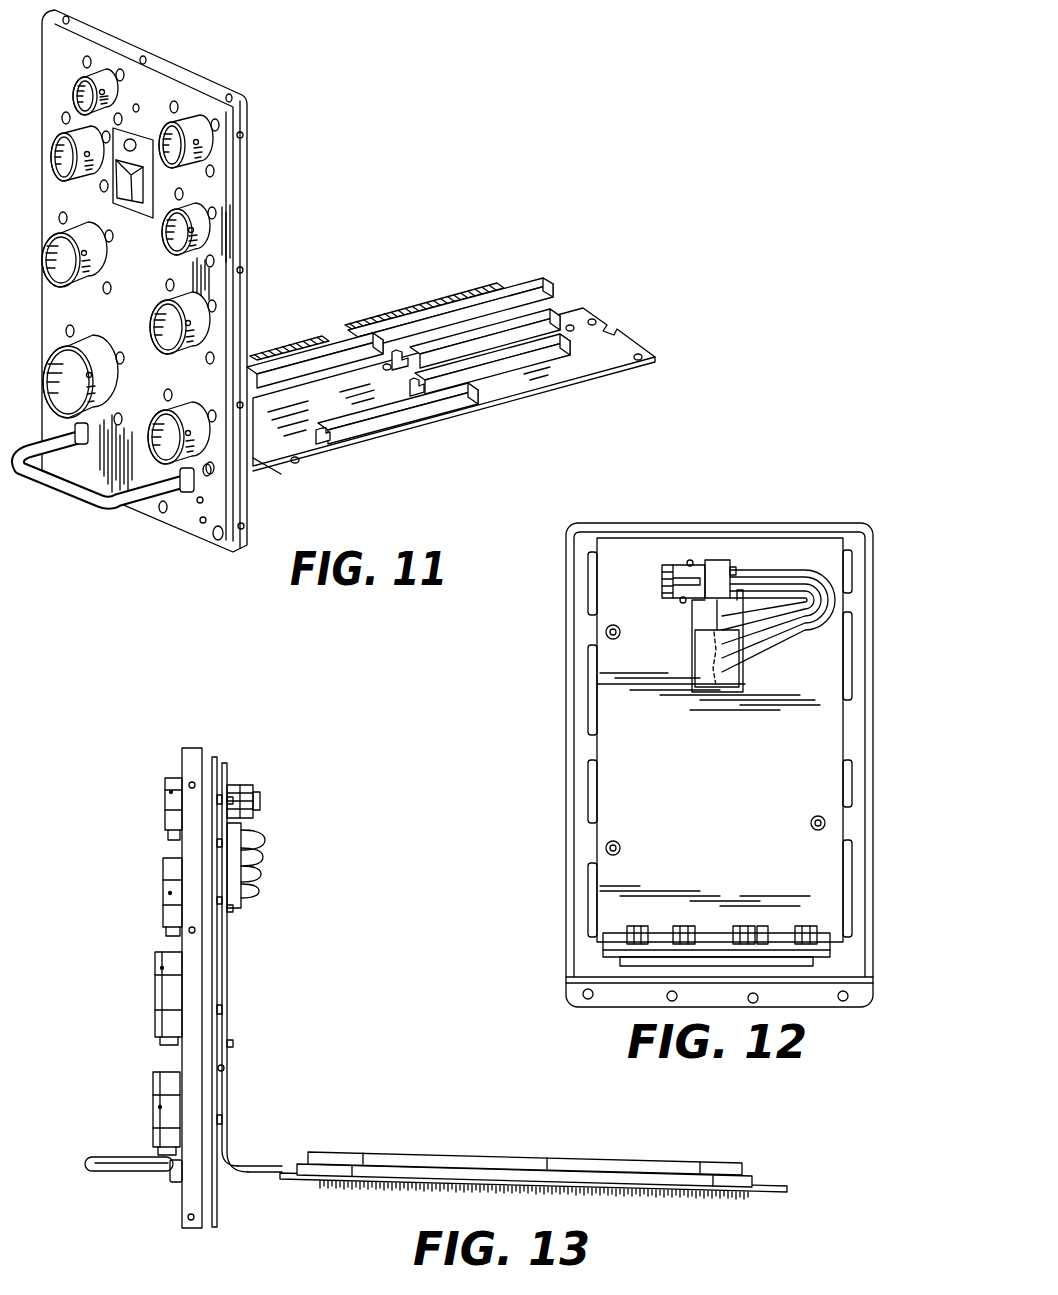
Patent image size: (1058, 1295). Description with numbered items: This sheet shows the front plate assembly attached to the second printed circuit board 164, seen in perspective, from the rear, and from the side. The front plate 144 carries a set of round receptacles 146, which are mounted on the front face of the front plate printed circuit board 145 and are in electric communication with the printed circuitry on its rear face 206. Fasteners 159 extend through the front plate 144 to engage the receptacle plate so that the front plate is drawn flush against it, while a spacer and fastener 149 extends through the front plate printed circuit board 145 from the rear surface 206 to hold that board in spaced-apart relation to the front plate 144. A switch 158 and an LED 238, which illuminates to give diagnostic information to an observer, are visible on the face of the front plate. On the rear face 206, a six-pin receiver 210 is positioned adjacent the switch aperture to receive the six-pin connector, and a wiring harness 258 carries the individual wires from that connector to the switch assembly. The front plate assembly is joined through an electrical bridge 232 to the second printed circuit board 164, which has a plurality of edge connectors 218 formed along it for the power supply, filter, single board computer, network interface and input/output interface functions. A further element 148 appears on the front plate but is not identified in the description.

In FIG. 11, the front plate 144 is at (217, 517).
In FIG. 13, the front plate 144 is at (202, 1228).
In FIG. 12, the front plate printed circuit board 145 is at (602, 533).
In FIG. 13, the front plate printed circuit board 145 is at (229, 764).
In FIG. 13, the receptacles 146 is at (143, 962).
In FIG. 11, the handle 148 is at (74, 502).
In FIG. 13, the handle 148 is at (112, 1176).
In FIG. 12, the spacer and fastener 149 is at (621, 851).
In FIG. 13, the spacer and fastener 149 is at (218, 1068).
In FIG. 11, the switch 158 is at (128, 200).
In FIG. 11, the fasteners 159 is at (212, 168).
In FIG. 11, the second printed circuit board 164 is at (560, 370).
In FIG. 12, the second printed circuit board 164 is at (830, 962).
In FIG. 12, the rear face 206 is at (735, 816).
In FIG. 12, the six-pin receiver 210 is at (691, 557).
In FIG. 11, the edge connectors 218 is at (357, 303).
In FIG. 13, the edge connectors 218 is at (551, 1145).
In FIG. 13, the electrical bridge 232 is at (251, 1171).
In FIG. 11, the LED 238 is at (134, 141).
In FIG. 12, the wiring harness 258 is at (782, 572).